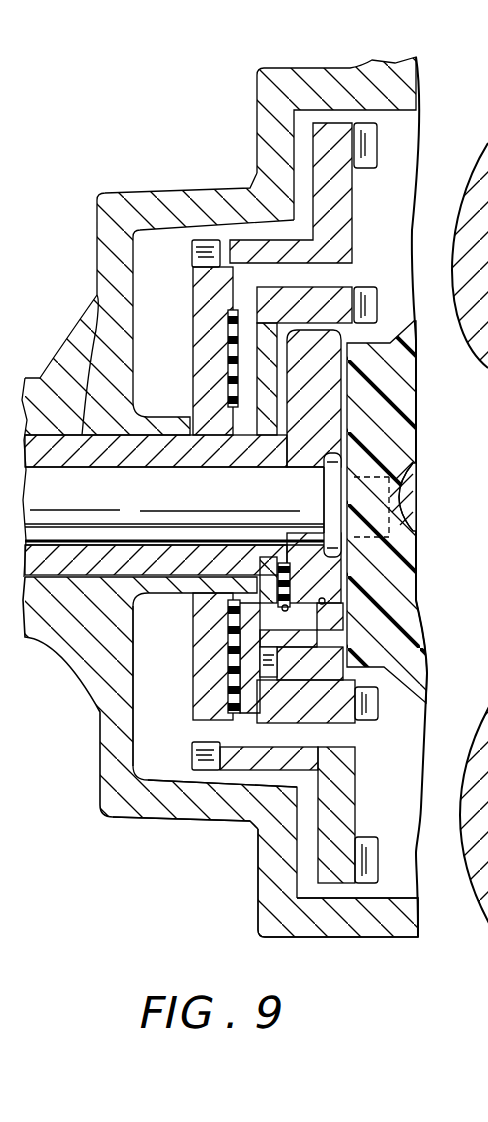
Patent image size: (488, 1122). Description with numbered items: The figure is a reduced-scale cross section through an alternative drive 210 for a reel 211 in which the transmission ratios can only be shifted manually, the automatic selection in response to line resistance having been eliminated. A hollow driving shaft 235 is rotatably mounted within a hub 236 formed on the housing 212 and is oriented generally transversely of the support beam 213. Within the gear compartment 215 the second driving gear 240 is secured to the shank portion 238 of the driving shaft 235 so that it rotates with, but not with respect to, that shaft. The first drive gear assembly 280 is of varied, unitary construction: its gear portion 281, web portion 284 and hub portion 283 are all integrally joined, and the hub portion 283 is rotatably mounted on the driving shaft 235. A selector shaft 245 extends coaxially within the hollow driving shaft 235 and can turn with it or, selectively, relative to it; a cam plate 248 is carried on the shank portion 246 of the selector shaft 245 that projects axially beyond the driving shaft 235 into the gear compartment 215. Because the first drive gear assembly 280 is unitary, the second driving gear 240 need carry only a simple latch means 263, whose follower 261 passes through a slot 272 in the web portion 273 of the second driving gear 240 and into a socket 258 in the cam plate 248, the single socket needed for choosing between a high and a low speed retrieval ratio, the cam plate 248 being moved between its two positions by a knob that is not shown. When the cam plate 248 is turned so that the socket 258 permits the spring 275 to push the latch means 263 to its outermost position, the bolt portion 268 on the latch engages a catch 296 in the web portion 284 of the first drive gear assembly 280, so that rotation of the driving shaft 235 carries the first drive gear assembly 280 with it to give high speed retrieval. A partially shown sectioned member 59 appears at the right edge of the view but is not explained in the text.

The reel 211 is at (193, 132).
The alternative drive 210 is at (159, 258).
The housing 212 is at (100, 257).
The hollow driving shaft 235 is at (70, 325).
The hub 236 is at (38, 385).
The web portion 273 is at (230, 368).
The second driving gear 240 is at (331, 293).
The cam plate 248 is at (337, 397).
The support beam 213 is at (412, 484).
The selector shaft 245 is at (174, 506).
The hub portion 283 is at (160, 585).
The shank portion 238 is at (257, 458).
The shank portion 246 is at (302, 494).
The spring 275 is at (286, 605).
The socket 258 is at (305, 630).
The follower 261 is at (312, 627).
The slot 272 is at (274, 660).
The latch means 263 is at (250, 622).
The bolt portion 268 is at (254, 705).
The catch 296 is at (345, 741).
The gear compartment 215 is at (163, 667).
The first drive gear assembly 280 is at (187, 713).
The web portion 284 is at (243, 785).
The gear portion 281 is at (327, 832).
The pulley 59 is at (470, 534).